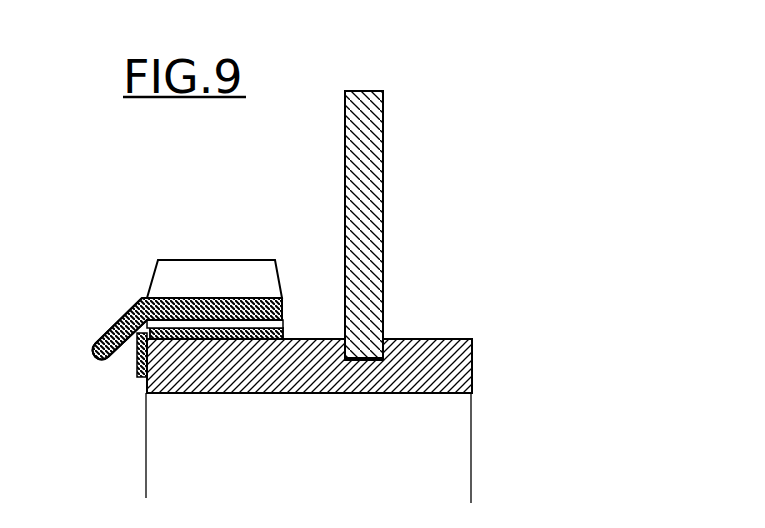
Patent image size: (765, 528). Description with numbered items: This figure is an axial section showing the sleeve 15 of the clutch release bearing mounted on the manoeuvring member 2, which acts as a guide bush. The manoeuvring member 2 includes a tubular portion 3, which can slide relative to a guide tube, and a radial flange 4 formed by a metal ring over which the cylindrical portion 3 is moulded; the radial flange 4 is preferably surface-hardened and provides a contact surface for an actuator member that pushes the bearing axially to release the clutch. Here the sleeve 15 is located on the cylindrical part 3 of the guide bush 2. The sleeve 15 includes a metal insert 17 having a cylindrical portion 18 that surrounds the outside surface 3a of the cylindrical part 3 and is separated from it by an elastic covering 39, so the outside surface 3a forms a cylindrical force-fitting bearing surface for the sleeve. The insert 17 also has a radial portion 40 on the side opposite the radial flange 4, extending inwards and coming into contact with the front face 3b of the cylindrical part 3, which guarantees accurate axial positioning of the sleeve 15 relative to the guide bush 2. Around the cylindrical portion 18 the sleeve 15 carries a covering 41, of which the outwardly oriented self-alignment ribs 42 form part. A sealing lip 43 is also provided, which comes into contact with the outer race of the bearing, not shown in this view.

The manoeuvring member 2 is at (477, 344).
The tubular portion 3 is at (447, 377).
The outside surface 3a is at (313, 323).
The front face 3b is at (146, 391).
The radial flange 4 is at (357, 243).
The sleeve 15 is at (142, 297).
The metal insert 17 is at (253, 340).
The cylindrical portion 18 is at (283, 323).
The elastic covering 39 is at (214, 339).
The radial portion 40 is at (134, 365).
The covering 41 is at (178, 302).
The self-alignment ribs 42 is at (208, 280).
The sealing lip 43 is at (105, 312).